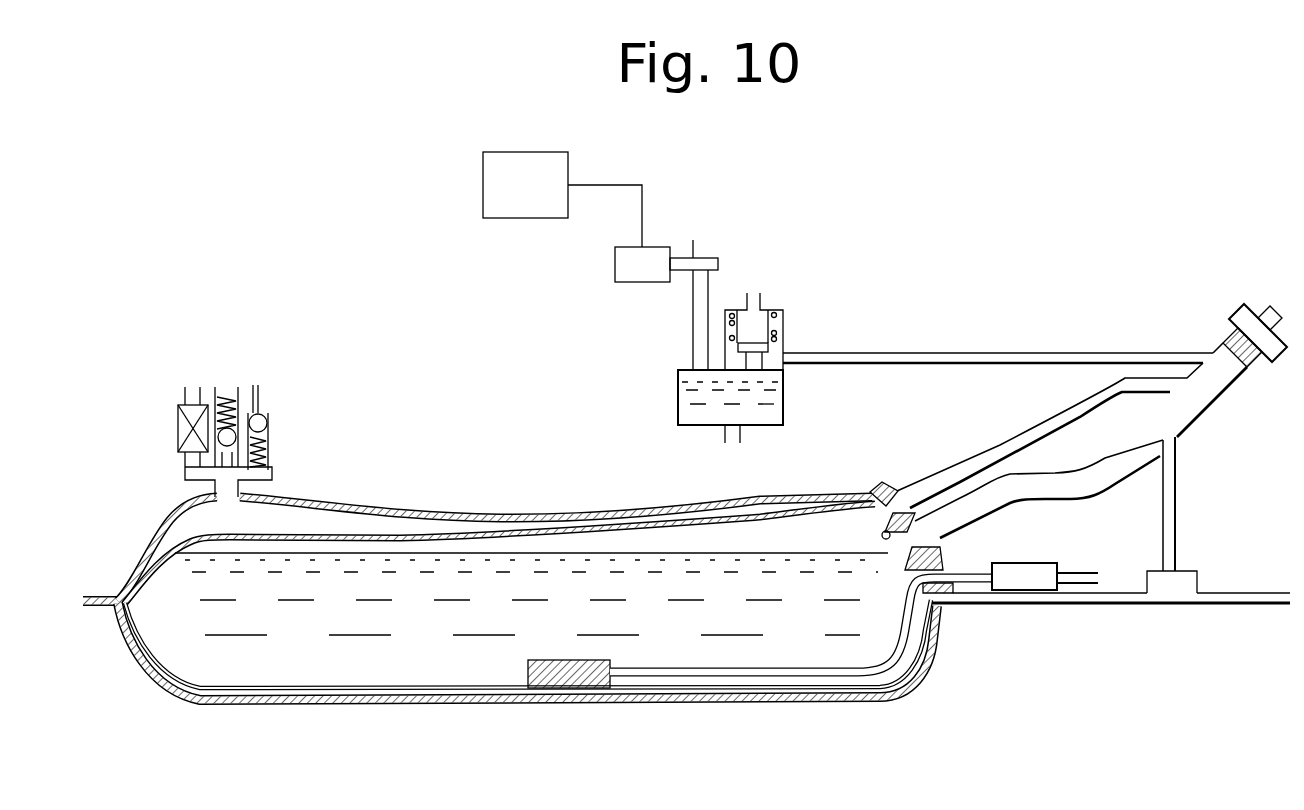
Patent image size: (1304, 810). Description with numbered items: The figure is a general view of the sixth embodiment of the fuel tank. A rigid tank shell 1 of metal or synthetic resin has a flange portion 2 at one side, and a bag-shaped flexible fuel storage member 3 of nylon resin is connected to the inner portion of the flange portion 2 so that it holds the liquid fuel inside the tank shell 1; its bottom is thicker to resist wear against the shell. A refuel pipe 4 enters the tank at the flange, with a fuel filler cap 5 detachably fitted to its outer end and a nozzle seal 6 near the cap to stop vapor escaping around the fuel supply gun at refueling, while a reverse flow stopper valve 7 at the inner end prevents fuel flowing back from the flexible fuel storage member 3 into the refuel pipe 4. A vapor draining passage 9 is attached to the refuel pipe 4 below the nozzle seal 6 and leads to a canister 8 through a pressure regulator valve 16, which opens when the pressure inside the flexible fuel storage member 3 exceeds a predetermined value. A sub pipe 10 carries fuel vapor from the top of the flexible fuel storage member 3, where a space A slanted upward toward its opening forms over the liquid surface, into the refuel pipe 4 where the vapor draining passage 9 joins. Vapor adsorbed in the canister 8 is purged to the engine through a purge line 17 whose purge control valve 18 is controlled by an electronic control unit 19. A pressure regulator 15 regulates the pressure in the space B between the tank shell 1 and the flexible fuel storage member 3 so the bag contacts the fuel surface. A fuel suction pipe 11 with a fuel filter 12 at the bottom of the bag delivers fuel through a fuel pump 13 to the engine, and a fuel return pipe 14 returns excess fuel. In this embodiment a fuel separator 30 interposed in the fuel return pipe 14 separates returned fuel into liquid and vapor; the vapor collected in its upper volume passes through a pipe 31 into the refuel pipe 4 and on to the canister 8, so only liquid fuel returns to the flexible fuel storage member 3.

The tank shell 1 is at (509, 515).
The flange portion 2 is at (882, 483).
The flexible fuel storage member 3 is at (428, 533).
The refuel pipe 4 is at (1048, 500).
The fuel filler cap 5 is at (1238, 318).
The nozzle seal 6 is at (1248, 369).
The reverse flow stopper valve 7 is at (900, 536).
The canister 8 is at (650, 393).
The vapor draining passage 9 is at (996, 352).
The sub pipe 10 is at (1003, 440).
The fuel suction pipe 11 is at (1080, 572).
The fuel filter 12 is at (572, 672).
The fuel pump 13 is at (1028, 590).
The fuel return pipe 14 is at (1126, 604).
The pressure regulator 15 is at (236, 361).
The pressure regulator valve 16 is at (768, 308).
The purge line 17 is at (702, 251).
The purge control valve 18 is at (615, 268).
The electronic control unit 19 is at (490, 188).
The fuel separator 30 is at (1184, 578).
The pipe 31 is at (1177, 483).
The space A is at (625, 540).
The space B is at (283, 520).